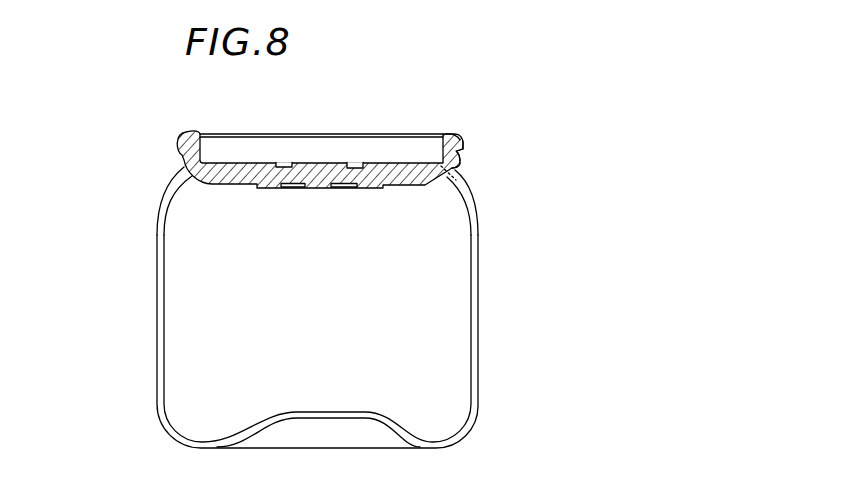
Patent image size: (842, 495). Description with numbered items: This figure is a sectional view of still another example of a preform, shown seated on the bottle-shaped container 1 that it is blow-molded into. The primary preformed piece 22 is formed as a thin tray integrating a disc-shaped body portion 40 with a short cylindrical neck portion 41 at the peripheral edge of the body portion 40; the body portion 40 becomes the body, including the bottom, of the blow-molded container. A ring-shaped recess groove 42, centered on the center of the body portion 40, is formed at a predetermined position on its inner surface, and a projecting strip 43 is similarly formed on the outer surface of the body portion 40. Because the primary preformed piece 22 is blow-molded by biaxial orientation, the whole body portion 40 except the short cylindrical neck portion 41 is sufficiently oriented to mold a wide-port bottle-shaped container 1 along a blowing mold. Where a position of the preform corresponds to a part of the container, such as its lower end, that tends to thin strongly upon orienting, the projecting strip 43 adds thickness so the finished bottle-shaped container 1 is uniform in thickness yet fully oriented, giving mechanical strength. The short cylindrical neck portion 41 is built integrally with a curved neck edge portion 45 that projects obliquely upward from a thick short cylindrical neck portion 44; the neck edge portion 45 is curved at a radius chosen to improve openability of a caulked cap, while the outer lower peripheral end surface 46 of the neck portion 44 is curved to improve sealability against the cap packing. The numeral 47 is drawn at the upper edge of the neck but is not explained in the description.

The bottle-shaped container 1 is at (155, 307).
The primary preformed piece 22 is at (369, 132).
The body portion 40 is at (392, 188).
The short cylindrical neck portion 41 is at (464, 150).
The ring-shaped recess groove 42 is at (286, 163).
The projecting strip 43 is at (272, 189).
The thick short cylindrical neck portion 44 is at (456, 168).
The curved neck edge portion 45 is at (463, 145).
The outer lower peripheral end surface 46 is at (459, 158).
The top edge 47 is at (457, 135).